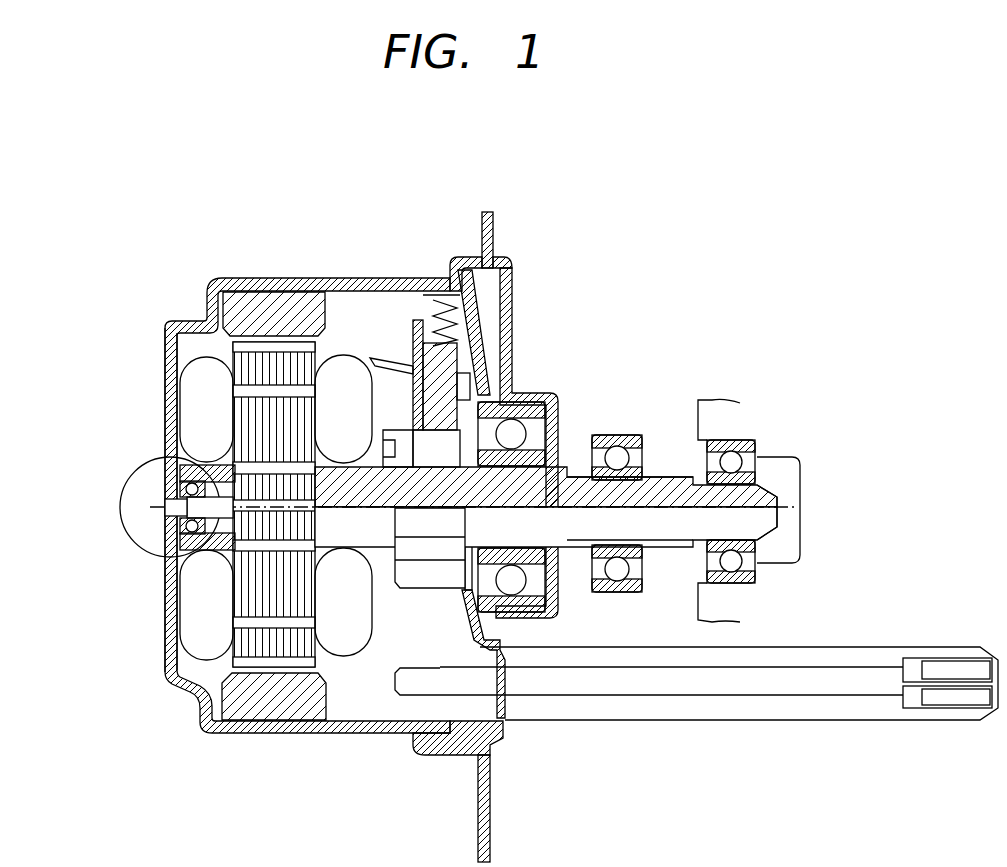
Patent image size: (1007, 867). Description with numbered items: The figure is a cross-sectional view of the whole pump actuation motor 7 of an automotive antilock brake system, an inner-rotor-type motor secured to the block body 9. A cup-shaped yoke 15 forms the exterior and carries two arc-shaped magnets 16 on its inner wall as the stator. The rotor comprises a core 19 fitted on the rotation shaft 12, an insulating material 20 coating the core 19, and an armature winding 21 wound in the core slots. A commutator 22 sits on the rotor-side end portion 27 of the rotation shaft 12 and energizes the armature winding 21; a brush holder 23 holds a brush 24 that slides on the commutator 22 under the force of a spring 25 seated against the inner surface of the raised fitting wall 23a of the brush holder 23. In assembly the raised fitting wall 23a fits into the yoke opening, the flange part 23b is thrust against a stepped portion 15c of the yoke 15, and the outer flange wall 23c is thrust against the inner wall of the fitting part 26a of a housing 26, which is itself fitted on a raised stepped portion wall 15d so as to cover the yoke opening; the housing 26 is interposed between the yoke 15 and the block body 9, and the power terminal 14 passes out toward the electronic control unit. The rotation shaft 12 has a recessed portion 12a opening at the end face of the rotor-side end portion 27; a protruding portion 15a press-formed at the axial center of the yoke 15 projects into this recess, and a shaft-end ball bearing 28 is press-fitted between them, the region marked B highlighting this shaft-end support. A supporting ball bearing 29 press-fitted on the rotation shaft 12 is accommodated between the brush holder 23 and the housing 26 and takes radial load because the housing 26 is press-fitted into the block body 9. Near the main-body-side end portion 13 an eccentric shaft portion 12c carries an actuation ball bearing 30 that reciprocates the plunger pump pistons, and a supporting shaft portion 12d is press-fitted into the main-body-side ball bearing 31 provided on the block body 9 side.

The pump actuation motor 7 is at (292, 200).
The block body 9 is at (696, 400).
The rotation shaft 12 is at (569, 475).
The recessed portion 12a is at (165, 498).
The eccentric shaft portion 12c is at (677, 538).
The supporting shaft portion 12d is at (779, 505).
The main-body-side end portion 13 is at (657, 480).
The terminal 14 is at (728, 690).
The yoke 15 is at (190, 320).
The protruding portion 15a is at (177, 515).
The stepped portion 15c is at (453, 257).
The raised stepped portion wall 15d is at (482, 225).
The arc-shaped magnet 16 is at (287, 300).
The core 19 is at (250, 611).
The insulating material 20 is at (230, 637).
The armature winding 21 is at (197, 433).
The commutator 22 is at (415, 590).
The brush holder 23 is at (480, 340).
The raised fitting wall 23a is at (415, 300).
The flange part 23b is at (470, 727).
The outer flange wall 23c is at (458, 751).
The brush 24 is at (423, 322).
The spring 25 is at (447, 292).
The housing 26 is at (508, 278).
The fitting part 26a is at (500, 266).
The rotor-side end portion 27 is at (185, 535).
The shaft-end ball bearing 28 is at (167, 368).
The supporting ball bearing 29 is at (513, 420).
The actuation ball bearing 30 is at (622, 435).
The main-body-side ball bearing 31 is at (748, 440).
The detail region B is at (155, 445).